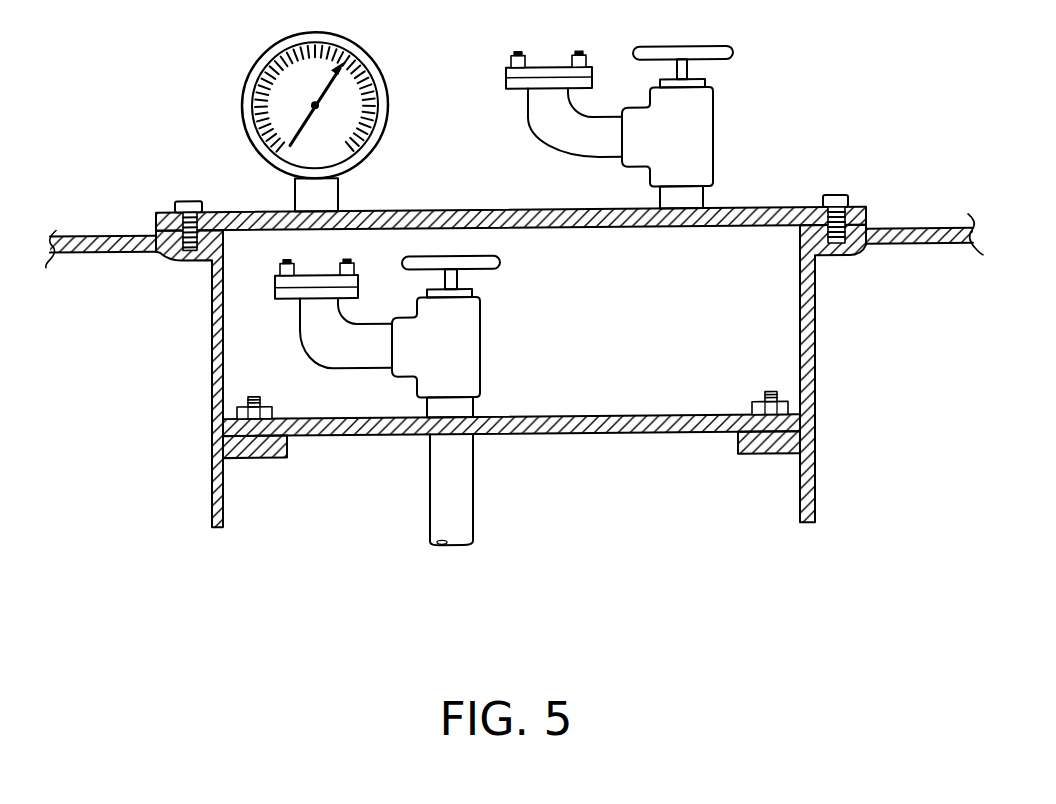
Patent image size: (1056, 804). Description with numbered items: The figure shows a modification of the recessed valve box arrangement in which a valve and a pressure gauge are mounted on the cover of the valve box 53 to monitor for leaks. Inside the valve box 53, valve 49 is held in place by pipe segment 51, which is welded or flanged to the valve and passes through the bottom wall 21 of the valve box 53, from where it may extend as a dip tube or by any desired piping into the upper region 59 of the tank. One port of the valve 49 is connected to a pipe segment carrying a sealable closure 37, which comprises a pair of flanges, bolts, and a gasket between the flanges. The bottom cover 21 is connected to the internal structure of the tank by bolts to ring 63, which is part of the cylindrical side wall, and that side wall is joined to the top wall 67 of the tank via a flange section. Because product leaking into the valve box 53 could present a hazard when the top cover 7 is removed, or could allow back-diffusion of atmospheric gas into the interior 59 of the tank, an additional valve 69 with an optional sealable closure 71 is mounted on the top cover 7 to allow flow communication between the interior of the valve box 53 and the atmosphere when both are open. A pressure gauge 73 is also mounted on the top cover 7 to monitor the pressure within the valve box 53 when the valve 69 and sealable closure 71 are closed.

The top cover 7 is at (475, 213).
The bottom wall 21 is at (608, 421).
The sealable closure 37 is at (268, 293).
The valve 49 is at (482, 360).
The pipe segment 51 is at (474, 501).
The valve box 53 is at (759, 337).
The upper region 59 is at (127, 304).
The ring 63 is at (258, 461).
The top wall 67 is at (72, 254).
The additional valve 69 is at (713, 142).
The sealable closure 71 is at (500, 73).
The pressure gauge 73 is at (245, 90).